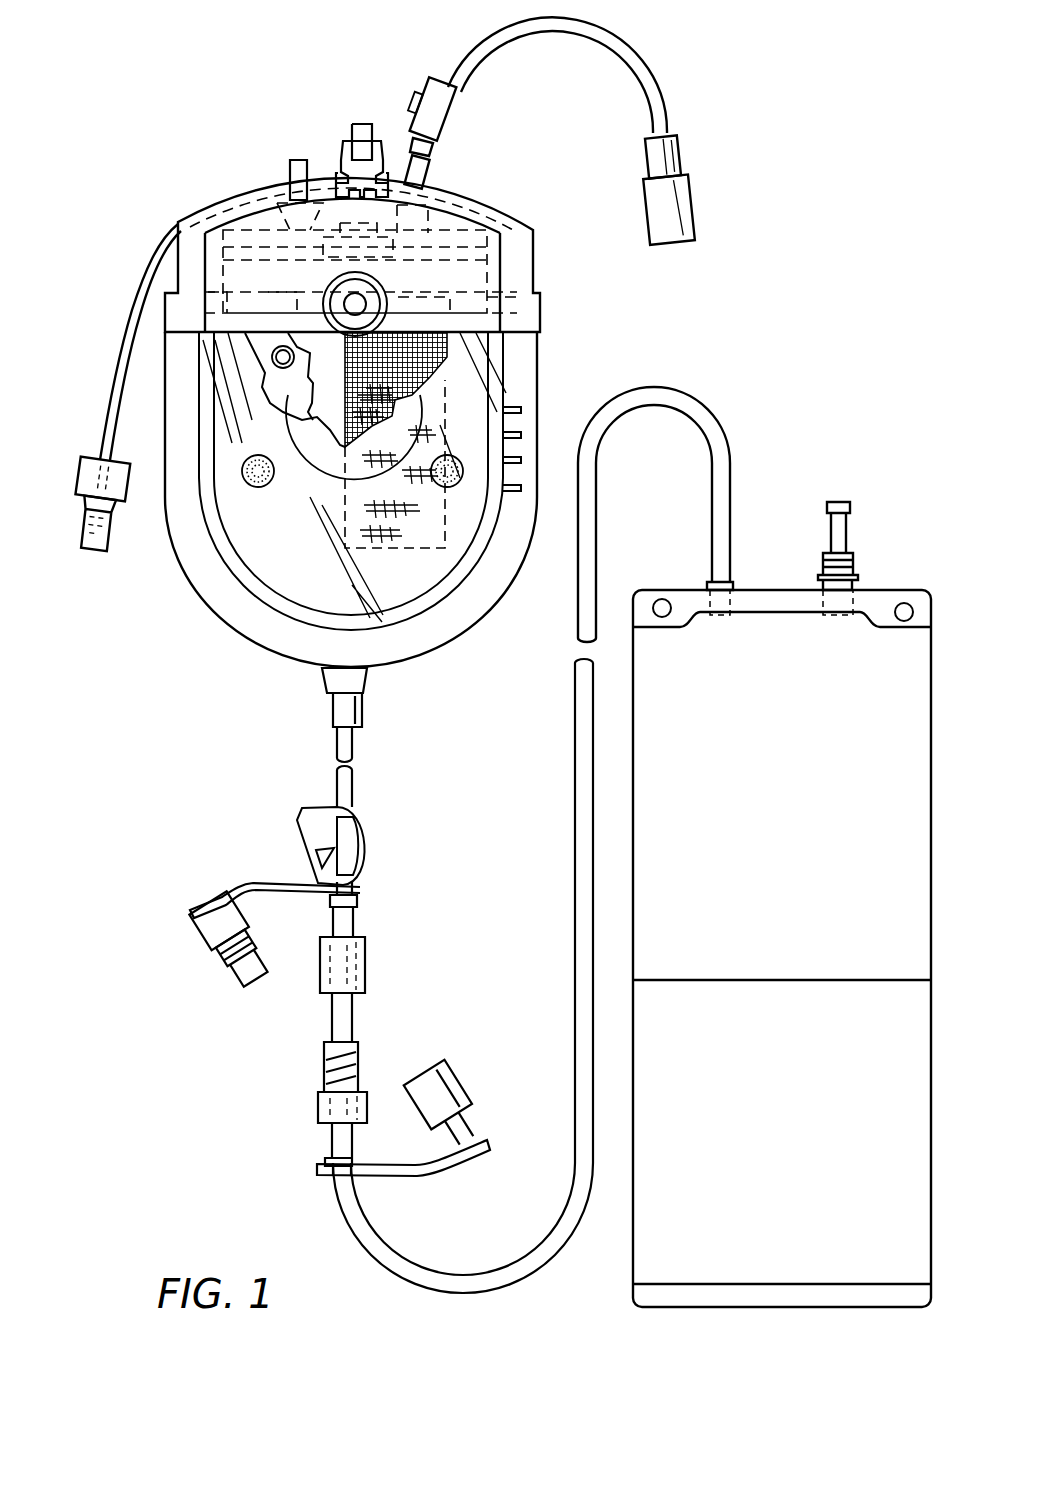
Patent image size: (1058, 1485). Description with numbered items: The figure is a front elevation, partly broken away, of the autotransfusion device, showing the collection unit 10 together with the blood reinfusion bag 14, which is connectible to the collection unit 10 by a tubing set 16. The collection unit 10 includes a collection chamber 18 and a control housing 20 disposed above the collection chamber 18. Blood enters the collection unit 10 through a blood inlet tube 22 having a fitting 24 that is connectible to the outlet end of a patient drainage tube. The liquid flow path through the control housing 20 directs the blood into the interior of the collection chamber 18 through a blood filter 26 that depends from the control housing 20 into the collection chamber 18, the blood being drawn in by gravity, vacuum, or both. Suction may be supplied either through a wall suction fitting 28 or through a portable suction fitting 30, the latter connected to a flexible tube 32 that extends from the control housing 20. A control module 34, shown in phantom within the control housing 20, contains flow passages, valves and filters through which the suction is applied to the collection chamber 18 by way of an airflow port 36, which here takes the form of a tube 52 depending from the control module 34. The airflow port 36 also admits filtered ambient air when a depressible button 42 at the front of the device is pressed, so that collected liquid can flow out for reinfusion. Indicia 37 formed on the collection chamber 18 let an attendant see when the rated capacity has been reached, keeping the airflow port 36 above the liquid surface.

The collection unit 10 is at (560, 325).
The blood reinfusion bag 14 is at (884, 593).
The tubing set 16 is at (577, 788).
The collection chamber 18 is at (540, 394).
The control housing 20 is at (537, 273).
The blood inlet tube 22 is at (648, 90).
The fitting 24 is at (696, 214).
The blood filter 26 is at (347, 420).
The wall suction fitting 28 is at (290, 162).
The portable suction fitting 30 is at (84, 536).
The flexible tube 32 is at (137, 290).
The control module 34 is at (467, 213).
The airflow port 36 is at (259, 347).
The indicia 37 is at (520, 462).
The depressible button 42 is at (362, 302).
The tube 52 is at (303, 381).